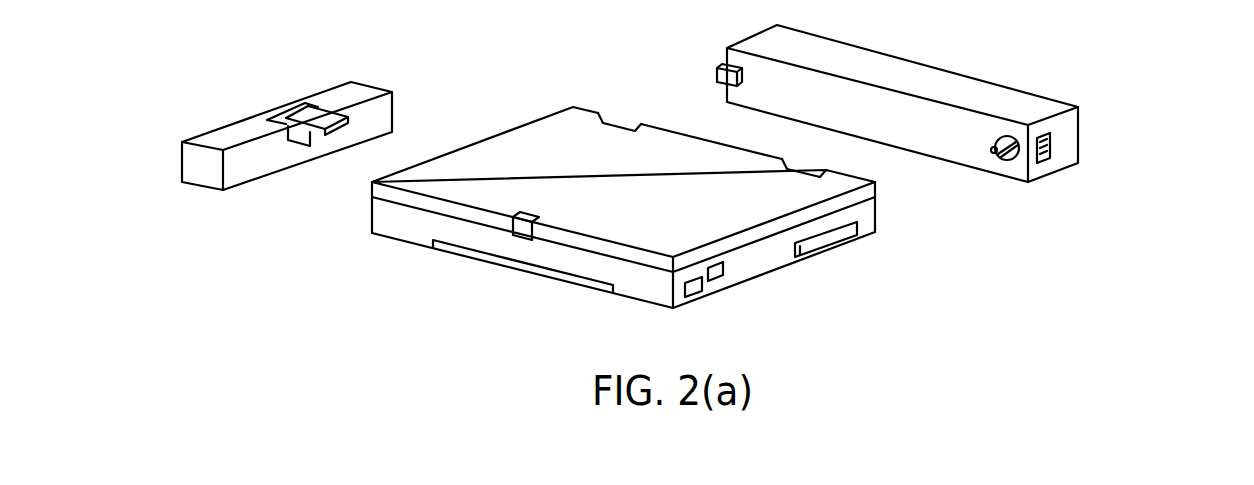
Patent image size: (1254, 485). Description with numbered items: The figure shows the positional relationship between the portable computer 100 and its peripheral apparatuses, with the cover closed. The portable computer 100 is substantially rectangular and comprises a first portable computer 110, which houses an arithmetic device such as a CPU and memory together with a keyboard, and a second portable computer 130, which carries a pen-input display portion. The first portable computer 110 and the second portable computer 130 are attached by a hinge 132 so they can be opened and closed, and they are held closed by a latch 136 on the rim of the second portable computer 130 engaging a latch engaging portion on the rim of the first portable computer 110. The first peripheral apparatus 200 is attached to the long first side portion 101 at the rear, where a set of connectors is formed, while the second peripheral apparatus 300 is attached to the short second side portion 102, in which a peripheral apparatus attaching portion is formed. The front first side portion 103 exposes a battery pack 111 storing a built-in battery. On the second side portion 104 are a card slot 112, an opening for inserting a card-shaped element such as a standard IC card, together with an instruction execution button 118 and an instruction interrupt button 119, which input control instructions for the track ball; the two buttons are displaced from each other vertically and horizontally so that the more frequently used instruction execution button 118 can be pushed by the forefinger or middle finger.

The portable computer 100 is at (673, 206).
The first side portion 101 is at (682, 112).
The second side portion 102 is at (448, 138).
The first side portion 103 is at (340, 245).
The second side portion 104 is at (967, 318).
The first portable computer 110 is at (669, 266).
The battery pack 111 is at (567, 262).
The card slot 112 is at (828, 242).
The instruction execution button 118 is at (725, 273).
The instruction interrupt button 119 is at (702, 290).
The second portable computer 130 is at (669, 199).
The hinge 132 is at (633, 118).
The latch 136 is at (520, 228).
The first peripheral apparatus 200 is at (913, 78).
The second peripheral apparatus 300 is at (218, 122).